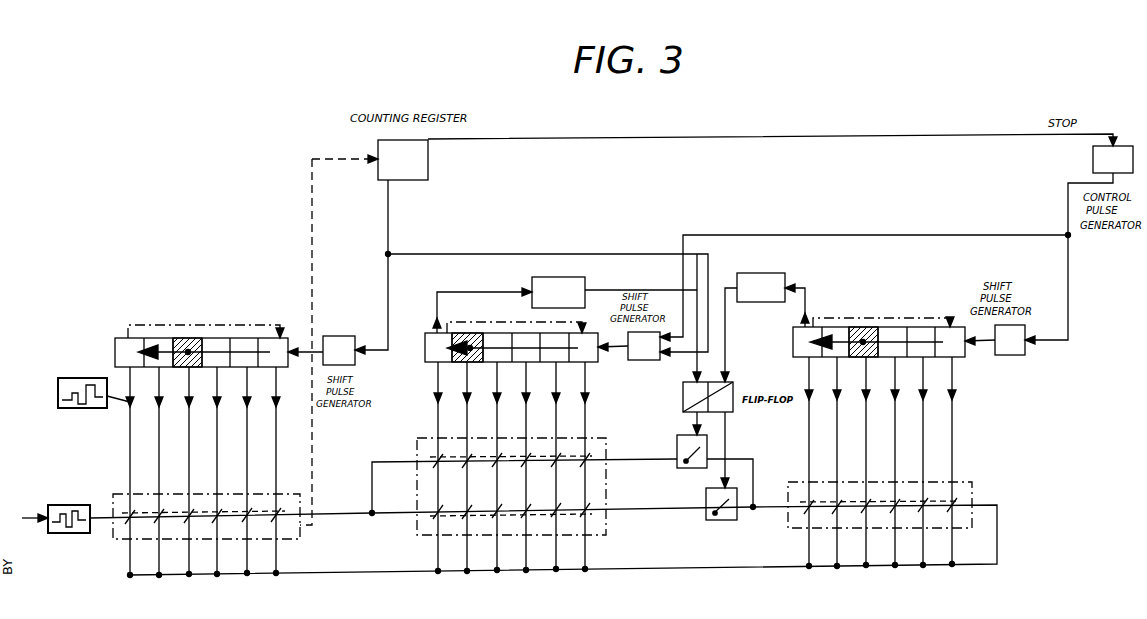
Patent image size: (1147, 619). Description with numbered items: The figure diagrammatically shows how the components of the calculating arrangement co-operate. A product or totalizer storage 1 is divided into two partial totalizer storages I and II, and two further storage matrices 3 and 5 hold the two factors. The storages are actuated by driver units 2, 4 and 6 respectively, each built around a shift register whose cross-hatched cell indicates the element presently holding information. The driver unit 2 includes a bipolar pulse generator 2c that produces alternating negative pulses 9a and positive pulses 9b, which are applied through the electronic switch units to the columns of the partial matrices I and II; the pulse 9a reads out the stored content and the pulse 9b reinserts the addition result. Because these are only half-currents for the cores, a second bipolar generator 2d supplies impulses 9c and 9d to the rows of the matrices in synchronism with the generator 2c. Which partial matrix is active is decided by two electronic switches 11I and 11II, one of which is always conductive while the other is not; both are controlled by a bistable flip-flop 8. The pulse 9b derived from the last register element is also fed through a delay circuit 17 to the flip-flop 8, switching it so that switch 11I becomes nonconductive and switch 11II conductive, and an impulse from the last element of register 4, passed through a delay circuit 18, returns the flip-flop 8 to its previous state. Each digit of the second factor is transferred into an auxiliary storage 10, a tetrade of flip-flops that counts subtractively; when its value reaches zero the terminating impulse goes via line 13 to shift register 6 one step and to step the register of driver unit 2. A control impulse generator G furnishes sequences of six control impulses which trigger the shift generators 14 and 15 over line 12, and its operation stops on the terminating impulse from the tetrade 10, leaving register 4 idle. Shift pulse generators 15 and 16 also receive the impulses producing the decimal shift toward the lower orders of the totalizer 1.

The product or totalizer storage 1 is at (417, 441).
The driver unit 2 is at (494, 333).
The bipolar pulse generator 2c is at (58, 386).
The second bipolar generator 2d is at (48, 507).
The factor storing device 3 is at (968, 482).
The driver unit 4 is at (920, 327).
The factor storing device 5 is at (287, 494).
The driver unit 6 is at (134, 338).
The bistable flip-flop 8 is at (733, 384).
The negative pulse 9a is at (74, 408).
The positive pulse 9b is at (88, 385).
The impulse 9c is at (66, 533).
The impulse 9d is at (76, 508).
The auxiliary storage 10 is at (403, 160).
The electronic switch 11I is at (677, 446).
The electronic switch 11II is at (706, 498).
The line 12 is at (683, 337).
The line 13 is at (379, 351).
The shift generator 14 is at (1010, 356).
The shift pulse generator 15 is at (640, 360).
The shift generator 16 is at (337, 336).
The delay circuit 17 is at (580, 277).
The delay circuit 18 is at (780, 273).
The partial totalizer storage I is at (425, 469).
The partial totalizer storage II is at (425, 523).
The control impulse generator G is at (1093, 158).